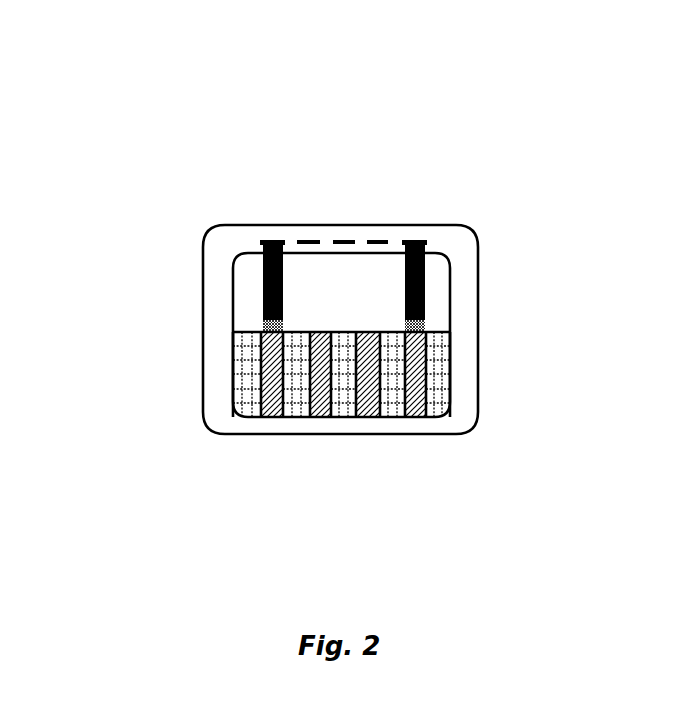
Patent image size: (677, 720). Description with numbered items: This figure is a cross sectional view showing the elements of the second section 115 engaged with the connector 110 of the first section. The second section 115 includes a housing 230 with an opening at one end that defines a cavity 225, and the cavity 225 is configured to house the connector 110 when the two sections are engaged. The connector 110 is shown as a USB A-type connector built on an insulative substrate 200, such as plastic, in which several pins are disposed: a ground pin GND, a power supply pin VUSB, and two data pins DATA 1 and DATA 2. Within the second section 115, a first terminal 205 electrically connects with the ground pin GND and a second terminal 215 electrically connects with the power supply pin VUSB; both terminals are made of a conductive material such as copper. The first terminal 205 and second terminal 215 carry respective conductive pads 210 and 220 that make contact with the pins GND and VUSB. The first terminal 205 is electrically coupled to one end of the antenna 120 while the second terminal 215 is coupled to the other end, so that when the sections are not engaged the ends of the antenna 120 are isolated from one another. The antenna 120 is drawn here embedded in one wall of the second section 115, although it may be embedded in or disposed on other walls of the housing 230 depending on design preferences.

The connector 110 is at (457, 370).
The second section 115 is at (470, 248).
The antenna 120 is at (322, 240).
The insulative substrate 200 is at (248, 375).
The first terminal 205 is at (262, 281).
The conductive pad 210 is at (262, 330).
The second terminal 215 is at (430, 280).
The conductive pad 220 is at (428, 321).
The cavity 225 is at (350, 300).
The housing 230 is at (478, 230).
The ground pin GND is at (268, 408).
The data pin DATA 2 is at (317, 405).
The data pin DATA 1 is at (368, 405).
The power supply pin VUSB is at (416, 387).